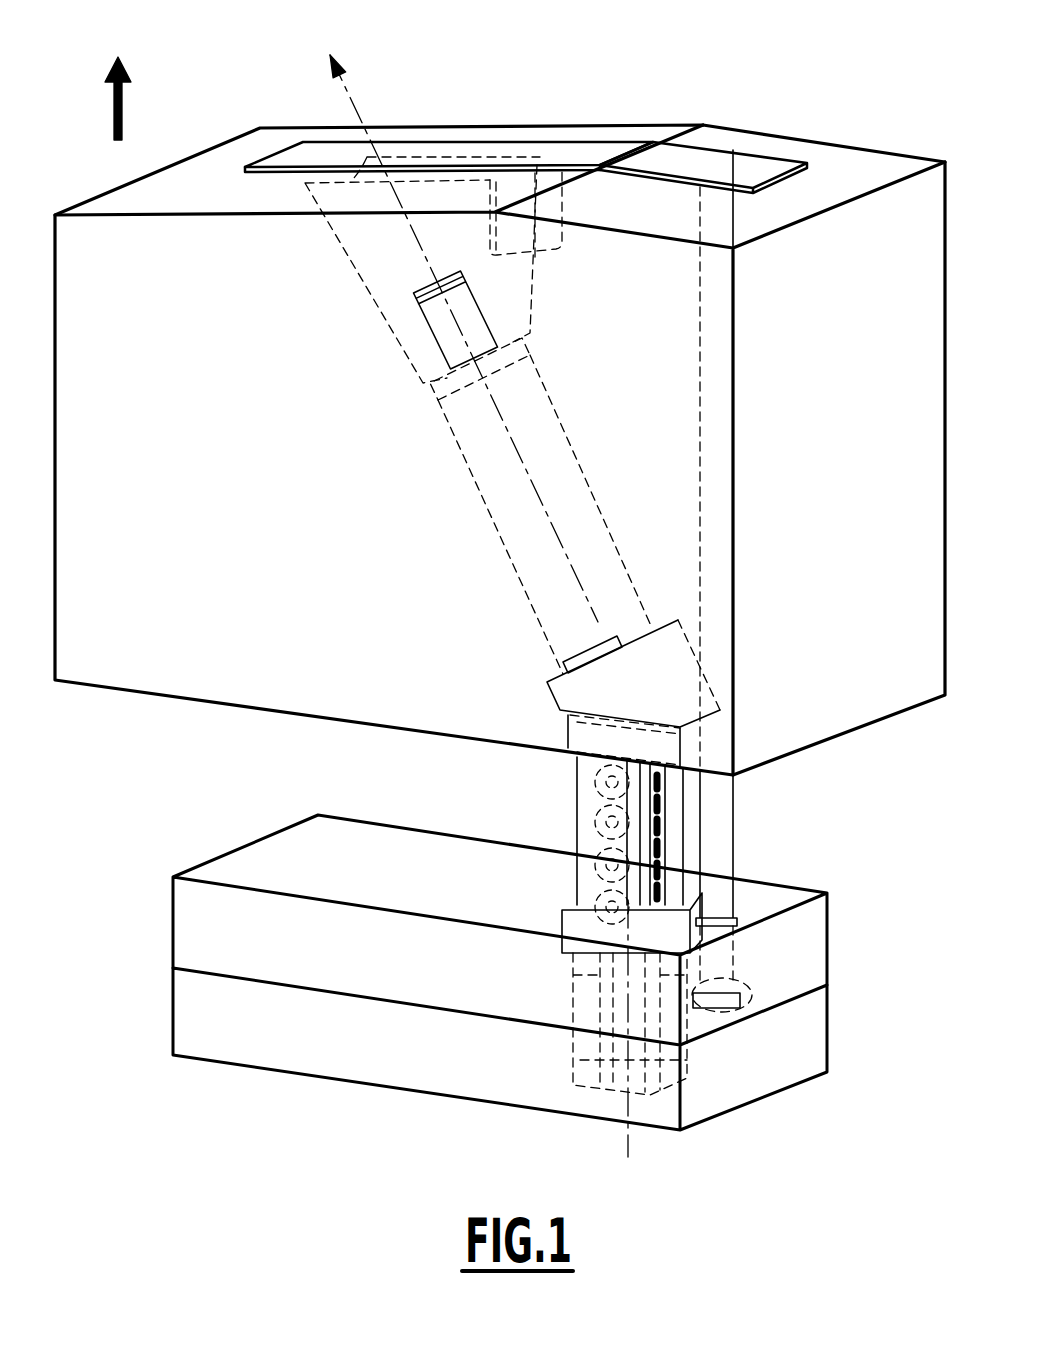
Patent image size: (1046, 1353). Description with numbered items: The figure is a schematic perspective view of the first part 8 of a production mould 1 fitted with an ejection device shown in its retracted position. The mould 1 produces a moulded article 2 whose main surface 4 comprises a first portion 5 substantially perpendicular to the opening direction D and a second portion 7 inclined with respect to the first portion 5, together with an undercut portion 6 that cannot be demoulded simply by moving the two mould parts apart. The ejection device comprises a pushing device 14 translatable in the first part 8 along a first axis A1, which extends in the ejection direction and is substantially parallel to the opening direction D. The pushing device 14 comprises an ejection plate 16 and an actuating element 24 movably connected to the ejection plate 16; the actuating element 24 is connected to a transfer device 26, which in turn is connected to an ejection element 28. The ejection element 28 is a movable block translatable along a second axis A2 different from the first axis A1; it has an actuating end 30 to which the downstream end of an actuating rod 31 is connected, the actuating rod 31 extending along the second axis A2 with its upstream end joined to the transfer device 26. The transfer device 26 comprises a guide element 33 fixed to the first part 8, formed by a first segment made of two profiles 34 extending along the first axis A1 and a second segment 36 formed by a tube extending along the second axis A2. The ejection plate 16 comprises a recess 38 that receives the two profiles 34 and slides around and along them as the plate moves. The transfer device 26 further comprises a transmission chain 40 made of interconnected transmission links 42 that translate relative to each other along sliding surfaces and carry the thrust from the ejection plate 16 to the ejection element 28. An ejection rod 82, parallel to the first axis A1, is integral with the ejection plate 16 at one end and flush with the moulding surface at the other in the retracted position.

The mould 1 is at (193, 102).
The opening direction D is at (109, 98).
The second portion 7 is at (302, 160).
The main surface 4 is at (513, 152).
The moulded article 2 is at (596, 152).
The first portion 5 is at (730, 183).
The undercut portion 6 is at (590, 203).
The ejection element 28 is at (368, 263).
The second axis A2 is at (356, 110).
The actuating rod 31 is at (490, 475).
The actuating end 30 is at (540, 593).
The second segment 36 is at (572, 503).
The ejection rod 82 is at (720, 330).
The transmission chain 40 is at (653, 785).
The guide element 33 is at (580, 805).
The transfer device 26 is at (663, 818).
The transmission link 42 is at (670, 833).
The profile 34 is at (637, 872).
The pushing device 14 is at (363, 855).
The ejection plate 16 is at (195, 1000).
The actuating element 24 is at (748, 988).
The recess 38 is at (598, 1035).
The first axis A1 is at (628, 1137).
The first part 8 is at (156, 710).